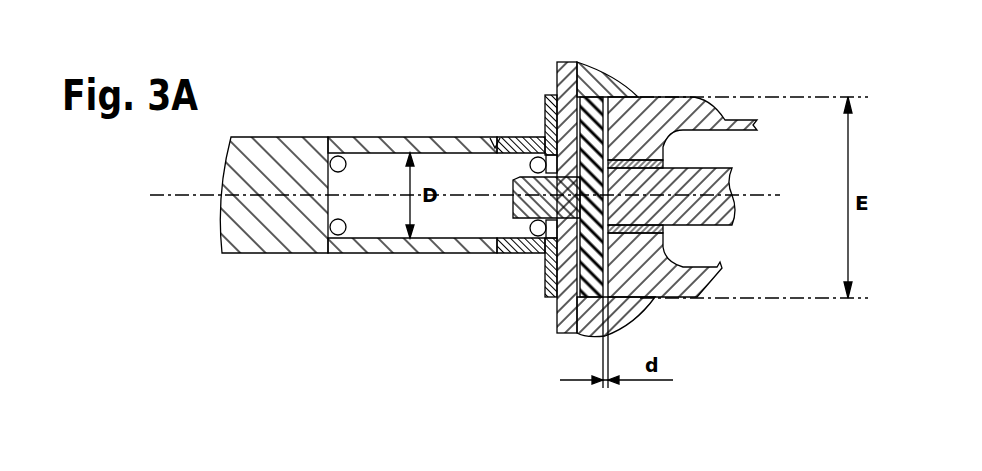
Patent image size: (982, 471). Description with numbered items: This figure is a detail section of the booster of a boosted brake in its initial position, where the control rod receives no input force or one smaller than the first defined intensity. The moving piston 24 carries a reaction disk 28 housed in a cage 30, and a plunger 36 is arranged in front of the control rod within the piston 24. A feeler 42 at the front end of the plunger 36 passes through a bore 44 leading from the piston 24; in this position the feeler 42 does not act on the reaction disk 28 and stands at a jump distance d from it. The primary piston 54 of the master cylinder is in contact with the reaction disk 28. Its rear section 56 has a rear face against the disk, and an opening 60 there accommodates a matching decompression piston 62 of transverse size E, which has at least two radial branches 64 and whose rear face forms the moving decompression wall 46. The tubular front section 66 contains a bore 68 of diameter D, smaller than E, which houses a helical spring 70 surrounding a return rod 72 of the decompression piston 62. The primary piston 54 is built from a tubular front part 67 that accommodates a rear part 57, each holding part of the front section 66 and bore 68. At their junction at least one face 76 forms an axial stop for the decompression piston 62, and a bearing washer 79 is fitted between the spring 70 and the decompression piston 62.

The moving piston 24 is at (650, 120).
The reaction disk 28 is at (600, 95).
The cage 30 is at (600, 337).
The plunger 36 is at (733, 178).
The feeler 42 is at (670, 247).
The bore 44 is at (637, 95).
The moving decompression wall 46 is at (578, 62).
The primary piston 54 is at (337, 75).
The rear section 56 is at (548, 103).
The rear part 57 is at (550, 278).
The opening 60 is at (557, 94).
The decompression piston 62 is at (662, 163).
The radial branches 64 is at (555, 317).
The tubular front section 66 is at (398, 137).
The tubular front part 67 is at (263, 218).
The bore 68 is at (373, 137).
The helical spring 70 is at (340, 252).
The return rod 72 is at (513, 205).
The stop face 76 is at (547, 125).
The bearing washer 79 is at (515, 185).